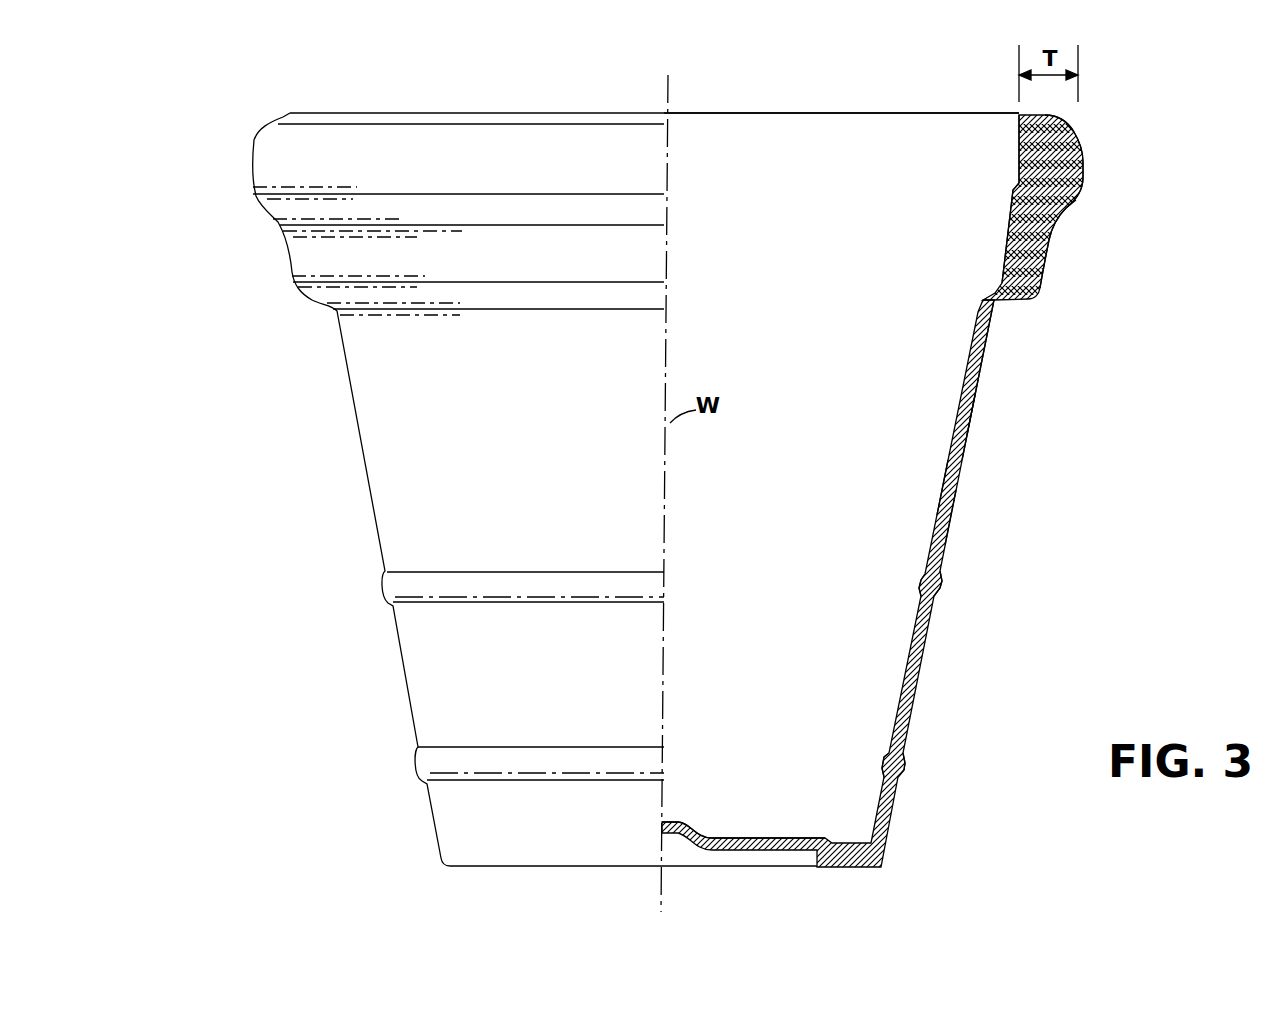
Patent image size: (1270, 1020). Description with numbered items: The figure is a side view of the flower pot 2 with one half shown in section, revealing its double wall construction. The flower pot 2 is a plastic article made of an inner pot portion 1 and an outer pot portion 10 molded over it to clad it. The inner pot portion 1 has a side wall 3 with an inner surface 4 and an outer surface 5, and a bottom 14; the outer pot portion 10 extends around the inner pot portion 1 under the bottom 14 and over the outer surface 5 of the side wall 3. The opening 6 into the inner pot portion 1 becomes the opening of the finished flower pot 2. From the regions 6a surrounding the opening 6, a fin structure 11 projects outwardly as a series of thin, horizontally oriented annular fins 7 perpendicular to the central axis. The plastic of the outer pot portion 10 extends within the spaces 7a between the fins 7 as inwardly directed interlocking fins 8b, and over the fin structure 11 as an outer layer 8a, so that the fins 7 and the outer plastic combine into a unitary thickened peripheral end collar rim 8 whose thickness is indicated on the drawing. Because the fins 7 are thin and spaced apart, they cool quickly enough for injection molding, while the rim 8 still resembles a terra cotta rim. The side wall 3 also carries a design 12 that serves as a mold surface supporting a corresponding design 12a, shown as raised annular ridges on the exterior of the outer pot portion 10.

The inner pot portion 1 is at (942, 472).
The flower pot 2 is at (212, 108).
The side wall 3 is at (965, 390).
The inner surface 4 is at (940, 498).
The outer surface 5 is at (970, 427).
The opening 6 is at (738, 137).
The regions surrounding the opening 6a is at (1018, 143).
The fins 7 is at (1080, 150).
The spaces between the fins 7a is at (1082, 172).
The peripheral end collar rim 8 is at (424, 113).
The outer layer of plastic 8a is at (1077, 203).
The interlocking fins 8b is at (1018, 181).
The outer pot portion 10 is at (950, 538).
The fin structure 11 is at (1083, 193).
The design 12 is at (928, 587).
The design 12a is at (490, 571).
The bottom 14 is at (748, 838).